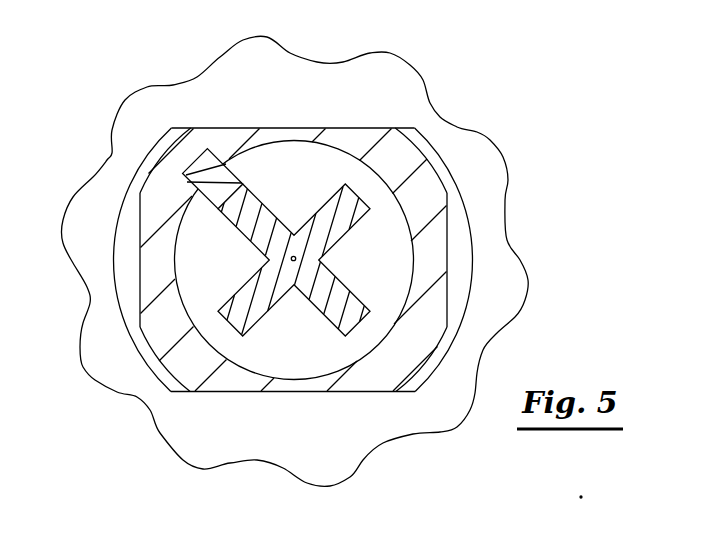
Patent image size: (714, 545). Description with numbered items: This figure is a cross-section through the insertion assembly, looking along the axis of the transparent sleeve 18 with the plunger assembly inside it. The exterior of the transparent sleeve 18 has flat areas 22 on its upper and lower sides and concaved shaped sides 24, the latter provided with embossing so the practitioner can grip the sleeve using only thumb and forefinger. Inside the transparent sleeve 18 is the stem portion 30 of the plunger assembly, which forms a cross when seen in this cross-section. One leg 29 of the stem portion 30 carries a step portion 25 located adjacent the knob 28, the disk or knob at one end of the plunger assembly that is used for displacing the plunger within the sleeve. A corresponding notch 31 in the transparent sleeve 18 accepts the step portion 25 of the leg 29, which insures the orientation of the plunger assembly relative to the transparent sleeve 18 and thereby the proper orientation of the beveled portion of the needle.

The transparent sleeve 18 is at (437, 252).
The flat areas 22 is at (350, 128).
The concaved shaped sides 24 is at (140, 232).
The step portion 25 is at (137, 172).
The knob 28 is at (478, 130).
The leg 29 is at (244, 223).
The stem portion 30 is at (269, 310).
The notch 31 is at (213, 152).